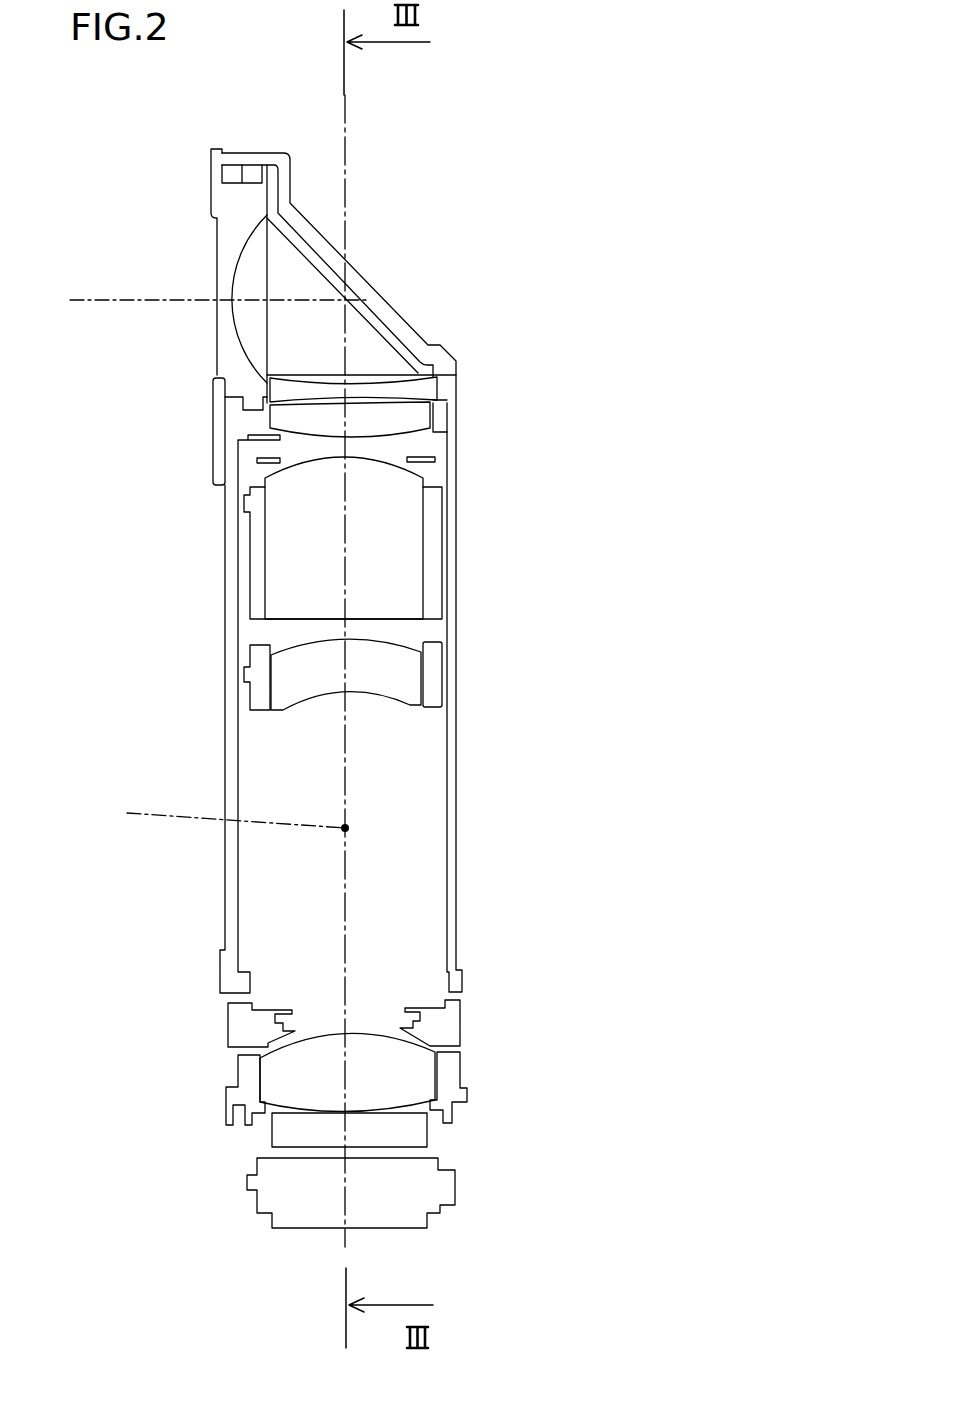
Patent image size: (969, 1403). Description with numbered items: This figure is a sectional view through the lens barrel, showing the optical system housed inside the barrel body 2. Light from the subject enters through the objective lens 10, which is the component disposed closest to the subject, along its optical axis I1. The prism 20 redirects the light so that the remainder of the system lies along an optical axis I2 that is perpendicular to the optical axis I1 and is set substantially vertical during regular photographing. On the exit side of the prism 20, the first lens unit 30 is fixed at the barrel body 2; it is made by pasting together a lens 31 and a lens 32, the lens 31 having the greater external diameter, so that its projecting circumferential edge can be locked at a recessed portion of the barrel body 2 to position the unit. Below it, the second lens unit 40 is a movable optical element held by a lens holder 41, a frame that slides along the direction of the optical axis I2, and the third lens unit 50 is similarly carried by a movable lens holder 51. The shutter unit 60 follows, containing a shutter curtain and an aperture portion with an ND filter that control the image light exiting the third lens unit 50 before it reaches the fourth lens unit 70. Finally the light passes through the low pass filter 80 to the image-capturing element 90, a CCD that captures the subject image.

The barrel body 2 is at (229, 642).
The objective lens 10 is at (227, 248).
The optical axis of the objective lens I1 is at (93, 312).
The prism 20 is at (354, 327).
The first lens unit 30 is at (573, 377).
The lens 31 is at (405, 388).
The lens 32 is at (405, 412).
The second lens unit 40 is at (397, 521).
The lens holder 41 is at (434, 561).
The third lens unit 50 is at (391, 668).
The lens holder 51 is at (434, 692).
The optical axis I2 is at (222, 820).
The shutter unit 60 is at (443, 1027).
The fourth lens unit 70 is at (395, 1073).
The low pass filter 80 is at (415, 1135).
The image-capturing element 90 is at (427, 1185).